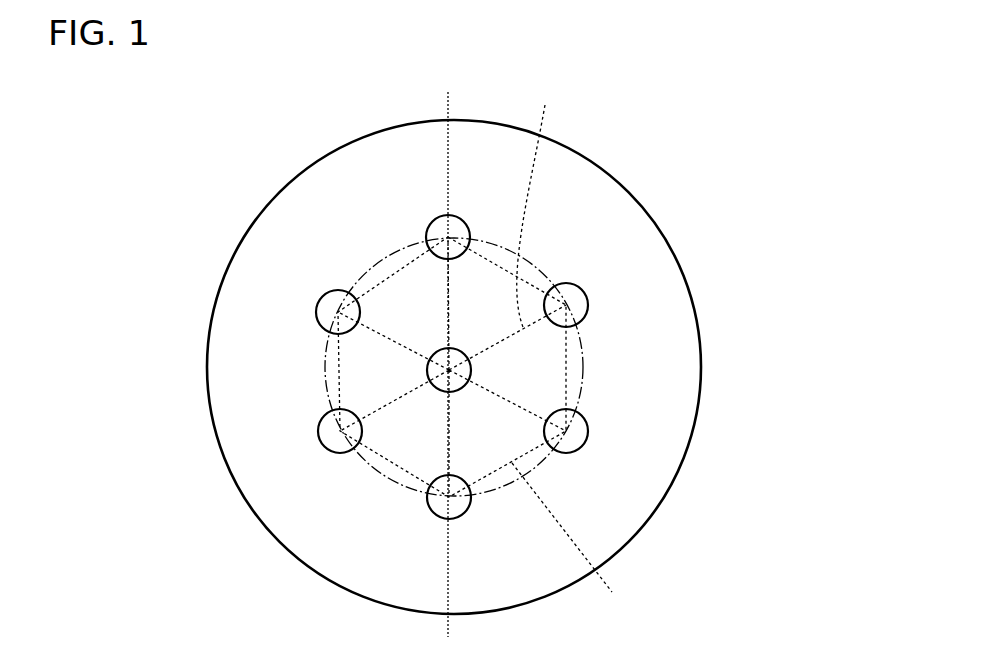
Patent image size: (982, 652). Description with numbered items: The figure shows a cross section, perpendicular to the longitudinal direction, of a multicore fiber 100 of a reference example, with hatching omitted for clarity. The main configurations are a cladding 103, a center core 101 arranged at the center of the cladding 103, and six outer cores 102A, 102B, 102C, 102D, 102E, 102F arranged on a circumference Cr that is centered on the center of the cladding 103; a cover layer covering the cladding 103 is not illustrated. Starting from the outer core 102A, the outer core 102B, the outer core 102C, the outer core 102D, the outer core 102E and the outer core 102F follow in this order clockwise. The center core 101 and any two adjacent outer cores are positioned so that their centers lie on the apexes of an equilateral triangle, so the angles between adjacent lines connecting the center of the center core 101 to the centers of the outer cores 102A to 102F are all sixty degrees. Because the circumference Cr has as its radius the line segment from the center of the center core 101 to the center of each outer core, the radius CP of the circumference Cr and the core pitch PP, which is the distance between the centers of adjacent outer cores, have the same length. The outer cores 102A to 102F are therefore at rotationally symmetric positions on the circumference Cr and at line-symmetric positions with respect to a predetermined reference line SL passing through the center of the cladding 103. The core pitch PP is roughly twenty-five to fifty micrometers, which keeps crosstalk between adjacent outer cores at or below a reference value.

The multicore fiber 100 is at (710, 174).
The center core 101 is at (437, 368).
The outer core 102A is at (440, 223).
The outer core 102B is at (573, 303).
The outer core 102C is at (568, 442).
The outer core 102D is at (440, 508).
The outer core 102E is at (332, 442).
The outer core 102F is at (330, 311).
The cladding 103 is at (677, 369).
The reference line SL is at (446, 353).
The radius of the circumference CP is at (538, 204).
The core pitch PP is at (568, 541).
The circumference Cr is at (360, 281).